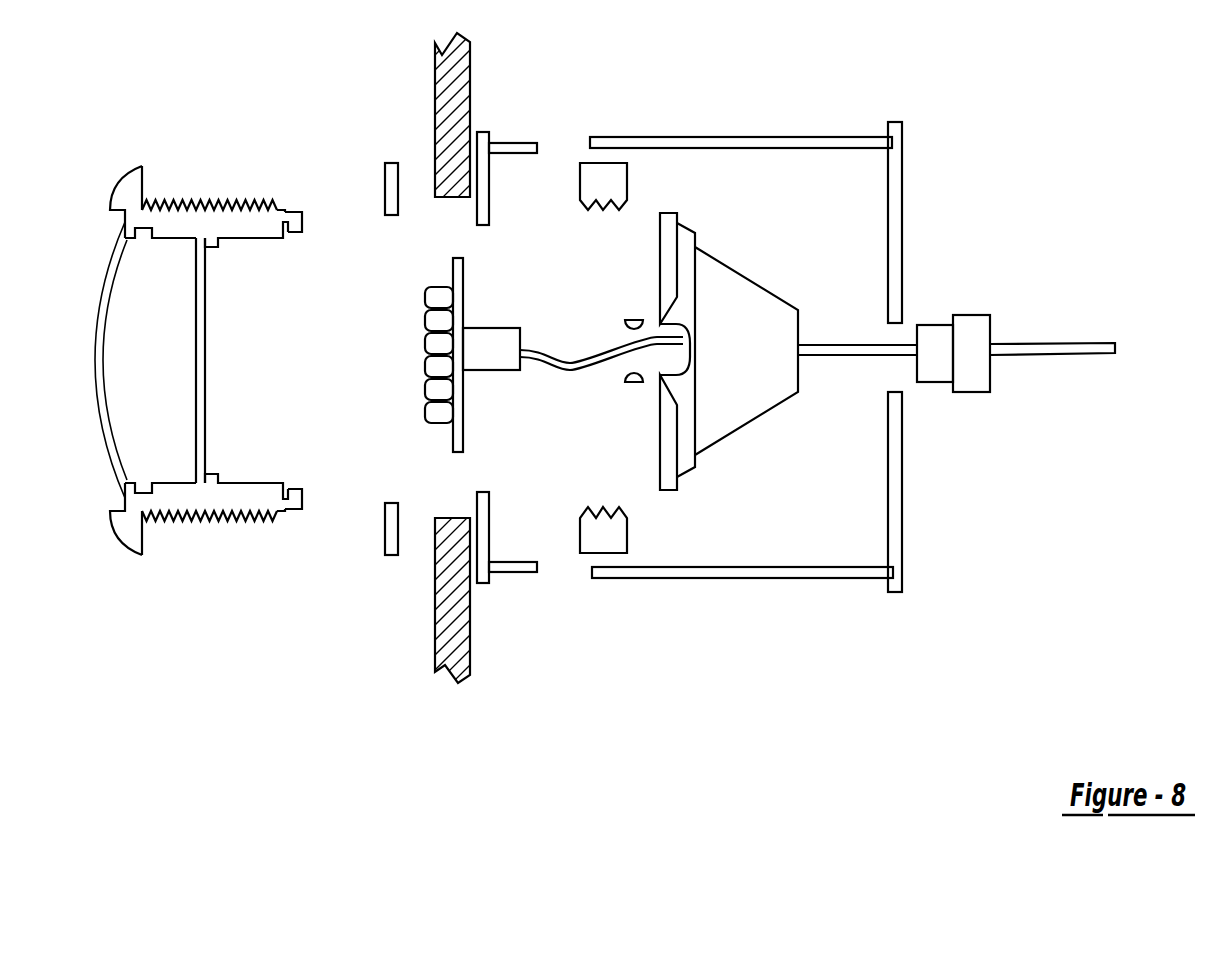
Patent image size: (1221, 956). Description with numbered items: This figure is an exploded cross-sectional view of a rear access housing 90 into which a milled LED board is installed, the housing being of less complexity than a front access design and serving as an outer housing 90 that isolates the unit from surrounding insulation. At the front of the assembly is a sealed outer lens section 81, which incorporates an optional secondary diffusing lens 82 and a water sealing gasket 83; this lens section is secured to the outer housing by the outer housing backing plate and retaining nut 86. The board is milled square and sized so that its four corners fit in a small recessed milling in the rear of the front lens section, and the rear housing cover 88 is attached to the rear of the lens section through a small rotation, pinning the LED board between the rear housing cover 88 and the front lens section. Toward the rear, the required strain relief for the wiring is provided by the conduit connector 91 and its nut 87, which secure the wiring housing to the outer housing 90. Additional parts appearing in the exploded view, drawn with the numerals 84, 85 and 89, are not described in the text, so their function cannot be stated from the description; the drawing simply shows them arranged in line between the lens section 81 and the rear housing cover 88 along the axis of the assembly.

The sealed outer lens section 81 is at (137, 558).
The secondary diffusing lens 82 is at (200, 523).
The water sealing gasket 83 is at (388, 558).
The insulating plate 84 is at (442, 682).
The transducer connector 85 is at (473, 443).
The outer housing retaining nut 86 is at (622, 580).
The nut 87 is at (633, 390).
The rear housing cover 88 is at (753, 437).
The shaft 89 is at (860, 367).
The rear access housing 90 is at (912, 493).
The conduit connector 91 is at (973, 395).